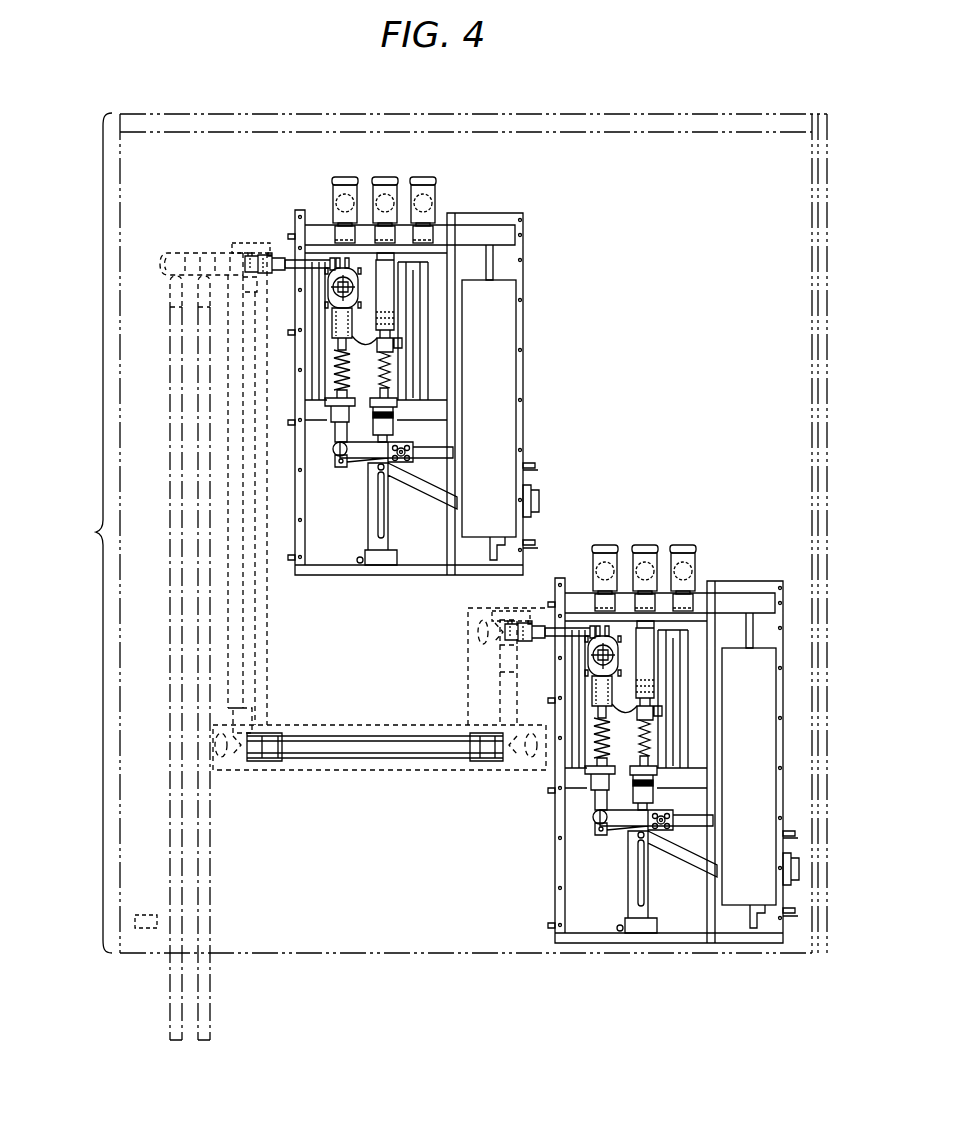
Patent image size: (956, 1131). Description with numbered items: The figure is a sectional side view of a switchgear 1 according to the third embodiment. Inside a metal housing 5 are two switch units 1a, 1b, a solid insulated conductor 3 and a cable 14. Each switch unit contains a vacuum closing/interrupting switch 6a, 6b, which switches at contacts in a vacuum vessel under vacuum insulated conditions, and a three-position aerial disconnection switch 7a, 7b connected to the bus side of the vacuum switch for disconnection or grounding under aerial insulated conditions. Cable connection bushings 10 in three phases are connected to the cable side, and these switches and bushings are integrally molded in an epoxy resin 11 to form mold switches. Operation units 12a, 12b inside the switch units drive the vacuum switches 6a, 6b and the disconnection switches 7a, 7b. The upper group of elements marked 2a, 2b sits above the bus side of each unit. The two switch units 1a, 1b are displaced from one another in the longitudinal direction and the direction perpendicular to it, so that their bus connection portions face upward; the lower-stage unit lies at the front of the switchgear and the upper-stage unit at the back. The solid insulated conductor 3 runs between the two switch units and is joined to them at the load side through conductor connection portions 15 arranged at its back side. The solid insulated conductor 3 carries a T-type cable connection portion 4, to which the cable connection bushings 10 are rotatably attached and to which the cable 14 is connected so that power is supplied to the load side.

The switchgear 1 is at (93, 533).
The switch unit 1a is at (530, 287).
The switch unit 1b is at (775, 577).
The ink reservoirs of first unit 2a is at (330, 168).
The ink reservoirs of second unit 2b is at (588, 538).
The solid insulated conductor 3 is at (368, 772).
The T-type cable connection portion 4 is at (157, 248).
The metal housing 5 is at (198, 114).
The vacuum closing/interrupting switch 6a is at (330, 322).
The vacuum closing/interrupting switch 6b is at (583, 685).
The three-position aerial disconnection switch 7a is at (427, 232).
The three-position aerial disconnection switch 7b is at (648, 633).
The cable connection bushing 10 is at (293, 272).
The epoxy resin 11 is at (412, 297).
The operation unit 12a is at (513, 368).
The operation unit 12b is at (733, 650).
The cable 14 is at (167, 806).
The conductor connection portion 15 is at (273, 247).